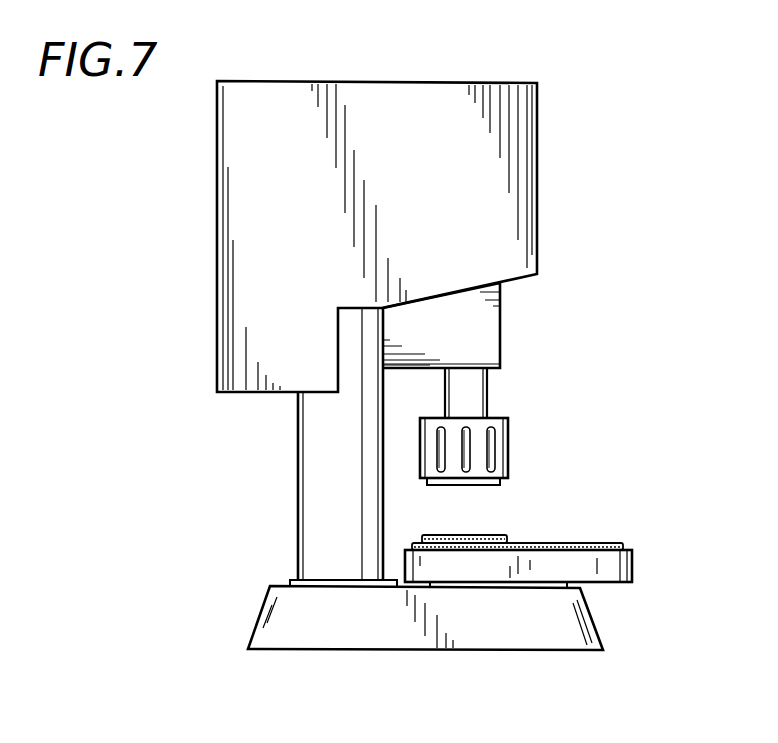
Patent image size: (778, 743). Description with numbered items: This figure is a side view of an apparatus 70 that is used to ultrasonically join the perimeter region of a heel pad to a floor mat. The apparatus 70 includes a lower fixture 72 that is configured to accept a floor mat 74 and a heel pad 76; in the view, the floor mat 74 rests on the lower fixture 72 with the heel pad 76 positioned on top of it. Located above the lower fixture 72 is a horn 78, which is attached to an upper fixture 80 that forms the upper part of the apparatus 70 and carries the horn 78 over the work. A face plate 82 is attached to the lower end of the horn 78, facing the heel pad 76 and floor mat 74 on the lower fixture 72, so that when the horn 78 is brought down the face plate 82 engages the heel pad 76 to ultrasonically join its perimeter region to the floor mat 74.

The apparatus 70 is at (170, 603).
The lower fixture 72 is at (632, 567).
The floor mat 74 is at (622, 545).
The heel pad 76 is at (507, 537).
The horn 78 is at (510, 430).
The upper fixture 80 is at (563, 250).
The face plate 82 is at (490, 486).